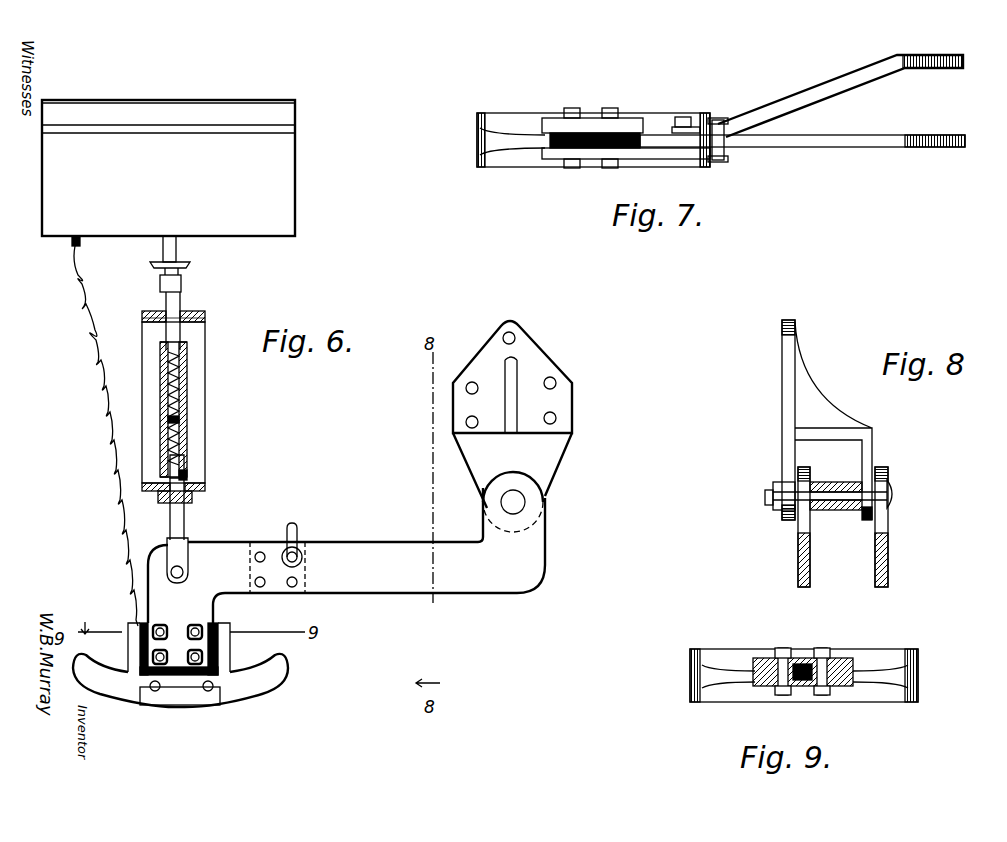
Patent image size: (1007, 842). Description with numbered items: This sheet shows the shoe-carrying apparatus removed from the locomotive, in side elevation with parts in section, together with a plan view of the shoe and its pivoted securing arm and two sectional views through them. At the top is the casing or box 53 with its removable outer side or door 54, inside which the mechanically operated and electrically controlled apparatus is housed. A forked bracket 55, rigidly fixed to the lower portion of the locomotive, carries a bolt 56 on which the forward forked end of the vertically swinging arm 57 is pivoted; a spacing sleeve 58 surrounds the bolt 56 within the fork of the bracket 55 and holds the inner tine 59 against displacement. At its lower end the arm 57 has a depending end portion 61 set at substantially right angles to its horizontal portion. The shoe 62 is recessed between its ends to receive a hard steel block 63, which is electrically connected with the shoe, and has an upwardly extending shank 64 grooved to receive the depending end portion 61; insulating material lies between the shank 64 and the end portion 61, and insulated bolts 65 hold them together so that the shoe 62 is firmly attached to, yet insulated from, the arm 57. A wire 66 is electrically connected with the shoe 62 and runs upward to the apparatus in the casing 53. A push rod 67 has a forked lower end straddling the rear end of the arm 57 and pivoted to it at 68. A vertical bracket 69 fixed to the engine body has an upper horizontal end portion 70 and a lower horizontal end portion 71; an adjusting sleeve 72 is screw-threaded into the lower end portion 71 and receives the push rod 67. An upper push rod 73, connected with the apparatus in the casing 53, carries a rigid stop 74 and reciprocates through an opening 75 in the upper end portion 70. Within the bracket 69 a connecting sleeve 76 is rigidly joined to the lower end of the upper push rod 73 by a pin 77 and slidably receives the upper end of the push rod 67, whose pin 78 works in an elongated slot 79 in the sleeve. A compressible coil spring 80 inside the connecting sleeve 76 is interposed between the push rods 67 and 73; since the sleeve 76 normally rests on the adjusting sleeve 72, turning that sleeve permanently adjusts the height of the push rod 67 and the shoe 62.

In FIG. 6, the casing or box 53 is at (304, 167).
In FIG. 6, the removable outer side or door 54 is at (171, 182).
In FIG. 6, the forked bracket 55 is at (537, 368).
In FIG. 8, the forked bracket 55 is at (785, 380).
In FIG. 6, the bolt 56 is at (514, 502).
In FIG. 8, the bolt 56 is at (895, 491).
In FIG. 6, the vertically swinging arm 57 is at (346, 555).
In FIG. 7, the vertically swinging arm 57 is at (828, 148).
In FIG. 8, the vertically swinging arm 57 is at (890, 548).
In FIG. 8, the spacing sleeve 58 is at (833, 510).
In FIG. 7, the inner tine 59 is at (840, 86).
In FIG. 8, the inner tine 59 is at (798, 556).
In FIG. 6, the depending end portion 61 is at (179, 632).
In FIG. 9, the depending end portion 61 is at (805, 690).
In FIG. 6, the shoe 62 is at (255, 692).
In FIG. 7, the shoe 62 is at (510, 118).
In FIG. 9, the shoe 62 is at (715, 655).
In FIG. 6, the hard steel block 63 is at (179, 707).
In FIG. 6, the shank 64 is at (226, 652).
In FIG. 7, the shank 64 is at (630, 125).
In FIG. 9, the shank 64 is at (848, 660).
In FIG. 6, the insulated bolts 65 is at (172, 621).
In FIG. 7, the insulated bolts 65 is at (574, 168).
In FIG. 9, the insulated bolts 65 is at (785, 697).
In FIG. 6, the wire 66 is at (108, 497).
In FIG. 6, the push rod 67 is at (185, 525).
In FIG. 6, the pivotal connection 68 is at (185, 572).
In FIG. 6, the vertical bracket 69 is at (205, 410).
In FIG. 6, the upper horizontal end portion 70 is at (205, 318).
In FIG. 6, the lower horizontal end portion 71 is at (216, 495).
In FIG. 6, the adjusting sleeve 72 is at (165, 498).
In FIG. 6, the upper push rod 73 is at (178, 245).
In FIG. 6, the stop 74 is at (182, 284).
In FIG. 6, the opening 75 is at (142, 318).
In FIG. 6, the connecting sleeve 76 is at (168, 398).
In FIG. 6, the pin 77 is at (187, 348).
In FIG. 6, the pin 78 is at (188, 482).
In FIG. 6, the elongated slot 79 is at (186, 456).
In FIG. 6, the compressible coil spring 80 is at (168, 432).